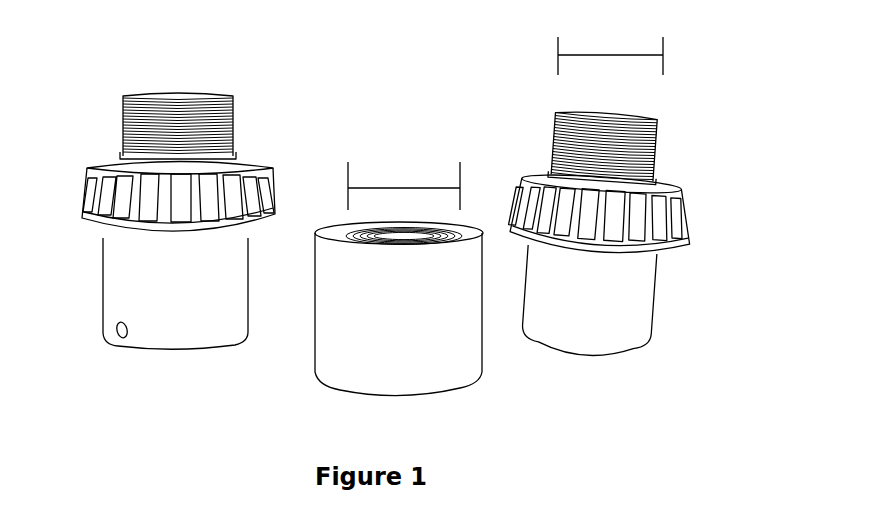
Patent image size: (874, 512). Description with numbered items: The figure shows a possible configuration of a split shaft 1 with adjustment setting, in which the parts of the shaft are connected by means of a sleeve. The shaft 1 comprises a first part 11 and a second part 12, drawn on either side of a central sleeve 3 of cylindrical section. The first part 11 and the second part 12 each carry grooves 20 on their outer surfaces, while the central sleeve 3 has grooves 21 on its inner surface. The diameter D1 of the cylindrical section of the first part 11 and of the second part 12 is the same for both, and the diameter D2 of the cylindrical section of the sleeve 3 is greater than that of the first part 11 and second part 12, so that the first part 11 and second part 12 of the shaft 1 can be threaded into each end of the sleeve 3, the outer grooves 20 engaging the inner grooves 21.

The split shaft 1 is at (396, 112).
The first part 11 is at (108, 125).
The second part 12 is at (704, 115).
The grooves 20 is at (238, 118).
The central sleeve 3 is at (489, 378).
The grooves 21 is at (362, 226).
The diameter of the first and second parts D1 is at (665, 43).
The diameter of the sleeve D2 is at (460, 168).